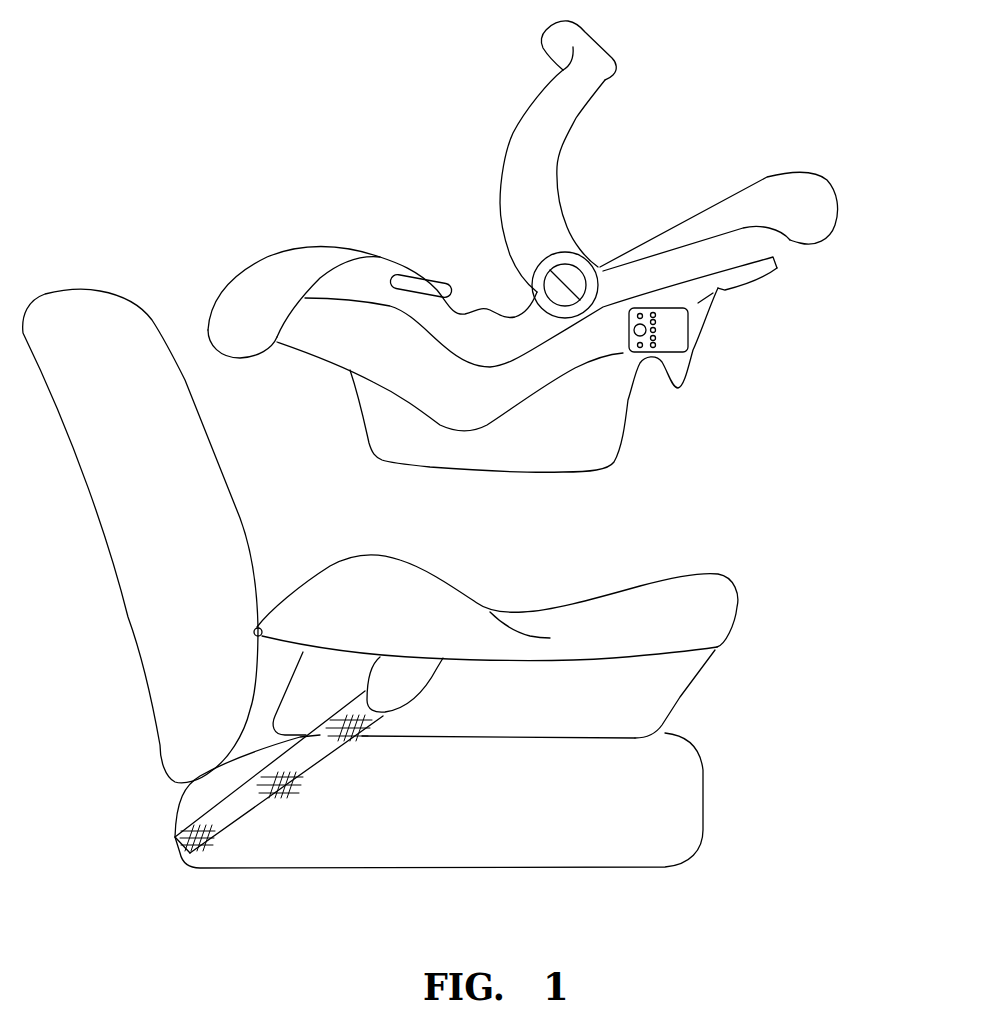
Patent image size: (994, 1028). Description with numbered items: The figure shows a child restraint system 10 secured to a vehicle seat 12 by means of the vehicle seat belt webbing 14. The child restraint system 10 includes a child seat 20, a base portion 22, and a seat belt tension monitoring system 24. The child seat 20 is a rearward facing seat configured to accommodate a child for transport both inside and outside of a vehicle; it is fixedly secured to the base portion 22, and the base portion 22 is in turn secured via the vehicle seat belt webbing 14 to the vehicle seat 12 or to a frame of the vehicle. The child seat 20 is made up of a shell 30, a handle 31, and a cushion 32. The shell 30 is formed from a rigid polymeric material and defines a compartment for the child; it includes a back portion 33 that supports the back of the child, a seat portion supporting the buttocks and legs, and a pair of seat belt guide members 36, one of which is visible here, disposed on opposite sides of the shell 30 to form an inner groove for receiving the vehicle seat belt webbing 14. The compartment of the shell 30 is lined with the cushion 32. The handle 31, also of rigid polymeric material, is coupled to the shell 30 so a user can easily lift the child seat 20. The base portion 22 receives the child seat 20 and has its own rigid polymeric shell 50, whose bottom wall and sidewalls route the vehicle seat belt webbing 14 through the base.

The child restraint system 10 is at (866, 218).
The vehicle seat 12 is at (690, 862).
The vehicle seat belt webbing 14 is at (262, 832).
The child seat 20 is at (788, 276).
The base portion 22 is at (728, 654).
The seat belt tension monitoring system 24 is at (688, 348).
The shell 30 is at (630, 401).
The handle 31 is at (593, 53).
The cushion 32 is at (782, 180).
The back portion 33 is at (723, 288).
The seat belt guide members 36 is at (420, 267).
The shell 50 is at (693, 577).